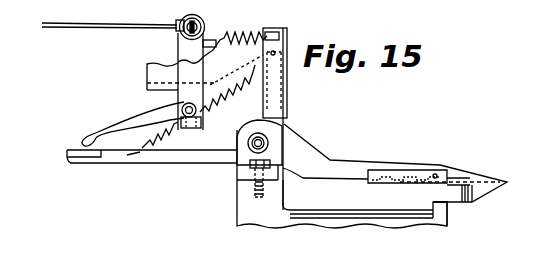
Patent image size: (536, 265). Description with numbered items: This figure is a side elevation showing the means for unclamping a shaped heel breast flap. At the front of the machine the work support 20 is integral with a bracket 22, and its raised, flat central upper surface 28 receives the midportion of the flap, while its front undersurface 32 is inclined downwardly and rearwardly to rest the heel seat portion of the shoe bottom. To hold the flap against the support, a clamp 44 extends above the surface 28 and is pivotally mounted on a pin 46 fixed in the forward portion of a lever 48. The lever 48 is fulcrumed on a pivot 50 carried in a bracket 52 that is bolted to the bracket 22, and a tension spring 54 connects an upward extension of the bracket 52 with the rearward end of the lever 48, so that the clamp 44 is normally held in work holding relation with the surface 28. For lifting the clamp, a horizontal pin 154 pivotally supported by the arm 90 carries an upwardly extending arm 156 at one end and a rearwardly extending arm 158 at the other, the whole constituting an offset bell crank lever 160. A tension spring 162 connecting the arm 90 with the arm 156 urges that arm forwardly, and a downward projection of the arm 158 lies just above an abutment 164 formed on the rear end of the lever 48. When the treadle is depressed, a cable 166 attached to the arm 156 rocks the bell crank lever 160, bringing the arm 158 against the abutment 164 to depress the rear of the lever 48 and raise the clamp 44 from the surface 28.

The cable 166 is at (78, 29).
The upwardly extending arm 156 is at (177, 43).
The offset bell crank lever 160 is at (148, 70).
The tension spring 162 is at (240, 35).
The arm 90 is at (290, 92).
The tension spring 54 is at (215, 100).
The horizontal pin 154 is at (168, 123).
The rearwardly extending arm 158 is at (85, 132).
The abutment 164 is at (83, 160).
The bracket 22 is at (237, 213).
The pivot 50 is at (243, 143).
The bracket 52 is at (291, 117).
The lever 48 is at (308, 155).
The pin 46 is at (436, 174).
The upper surface 28 is at (450, 184).
The clamp 44 is at (480, 175).
The front undersurface 32 is at (488, 197).
The work support 20 is at (447, 206).